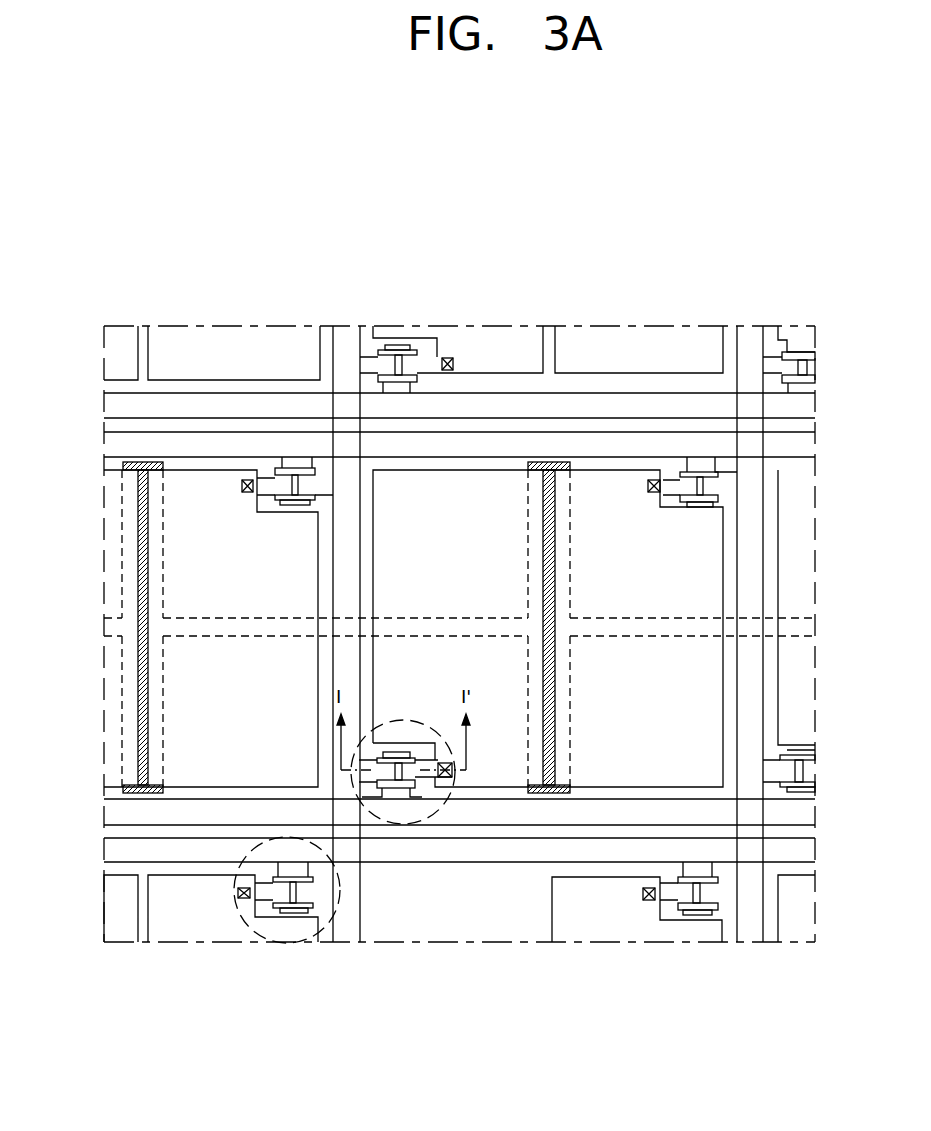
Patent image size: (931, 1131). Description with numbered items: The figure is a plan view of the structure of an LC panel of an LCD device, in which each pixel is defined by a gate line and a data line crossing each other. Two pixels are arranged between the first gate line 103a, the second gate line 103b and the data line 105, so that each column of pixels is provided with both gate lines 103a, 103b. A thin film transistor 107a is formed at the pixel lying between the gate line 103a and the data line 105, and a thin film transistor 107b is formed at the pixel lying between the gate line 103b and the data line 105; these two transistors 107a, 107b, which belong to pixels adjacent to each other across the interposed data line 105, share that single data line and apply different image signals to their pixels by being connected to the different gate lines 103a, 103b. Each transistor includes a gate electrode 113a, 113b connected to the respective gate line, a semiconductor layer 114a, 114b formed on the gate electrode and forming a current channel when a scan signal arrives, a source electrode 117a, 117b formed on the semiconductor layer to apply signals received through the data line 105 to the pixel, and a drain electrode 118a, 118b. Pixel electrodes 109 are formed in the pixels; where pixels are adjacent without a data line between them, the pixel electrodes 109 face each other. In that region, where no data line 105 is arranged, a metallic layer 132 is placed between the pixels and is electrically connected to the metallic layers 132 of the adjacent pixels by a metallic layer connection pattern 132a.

The metallic layer 132 is at (147, 462).
The metallic layer connection pattern 132a is at (220, 623).
The data line 105 is at (345, 342).
The pixel electrode 109 is at (490, 470).
The first gate line 103a is at (118, 810).
The second gate line 103b is at (118, 848).
The thin film transistor 107a is at (453, 793).
The thin film transistor 107b is at (348, 905).
The gate electrode 113a is at (413, 775).
The gate electrode 113b is at (290, 866).
The semiconductor layer 114a is at (403, 795).
The semiconductor layer 114b is at (296, 903).
The source electrode 117a is at (375, 773).
The source electrode 117b is at (315, 893).
The drain electrode 118a is at (430, 793).
The drain electrode 118b is at (268, 892).